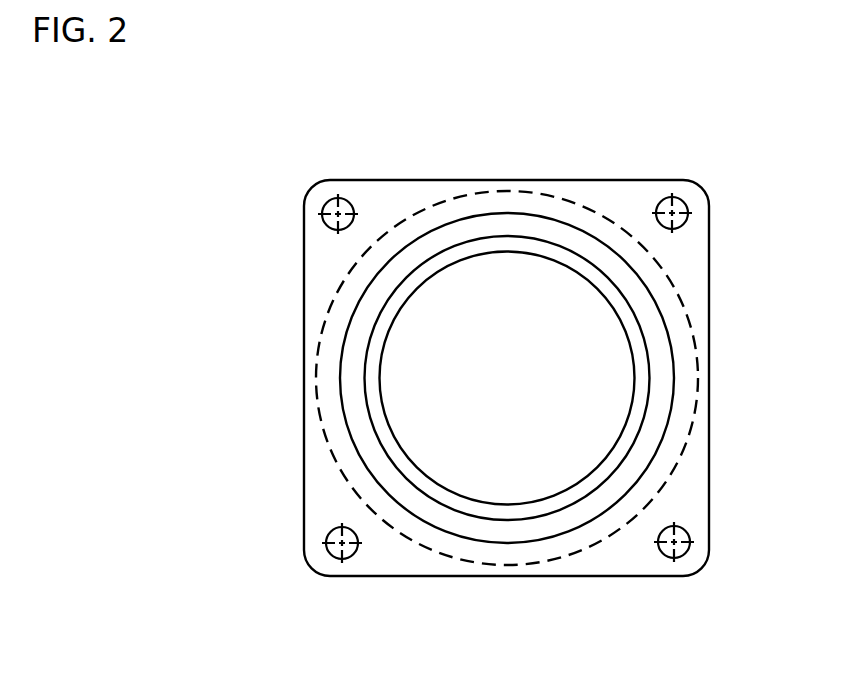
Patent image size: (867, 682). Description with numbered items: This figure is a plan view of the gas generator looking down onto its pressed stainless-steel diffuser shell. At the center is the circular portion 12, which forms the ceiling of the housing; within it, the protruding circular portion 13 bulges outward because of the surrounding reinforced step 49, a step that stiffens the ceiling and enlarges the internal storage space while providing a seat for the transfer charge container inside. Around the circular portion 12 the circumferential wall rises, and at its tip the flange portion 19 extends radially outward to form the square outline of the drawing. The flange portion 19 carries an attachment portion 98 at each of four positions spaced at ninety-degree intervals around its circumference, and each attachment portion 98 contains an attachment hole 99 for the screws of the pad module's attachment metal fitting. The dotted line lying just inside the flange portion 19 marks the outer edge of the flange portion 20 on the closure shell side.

The circular portion 12 is at (527, 225).
The protruding circular portion 13 is at (472, 268).
The flange portion 19 is at (709, 237).
The flange portion 20 is at (612, 223).
The reinforced step 49 is at (418, 275).
The attachment portion 98 is at (326, 533).
The attachment hole 99 is at (668, 557).